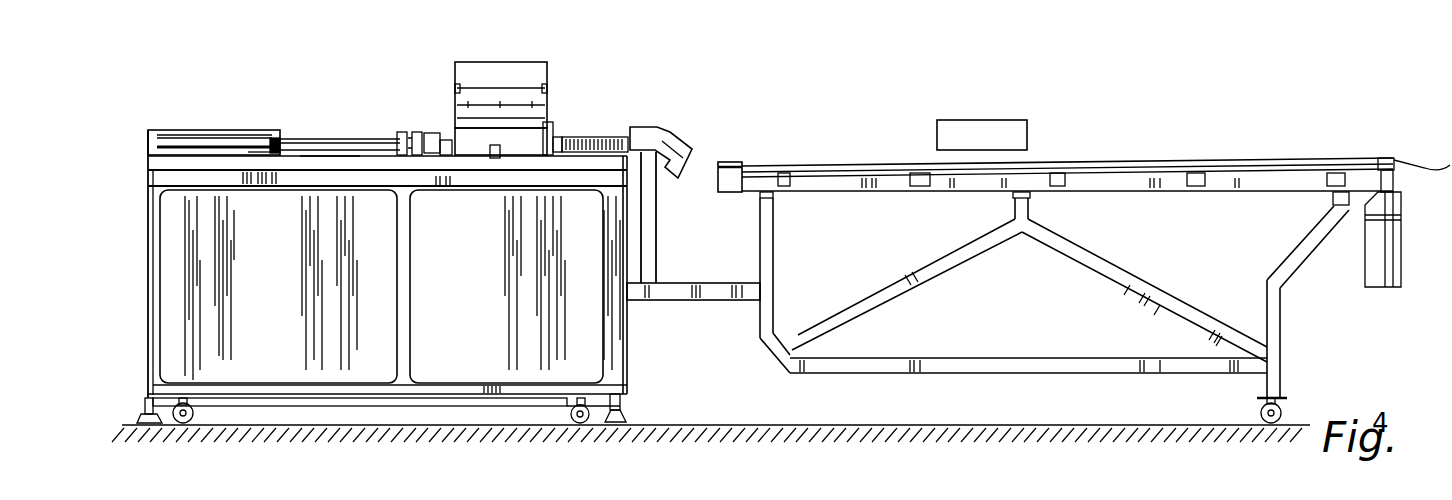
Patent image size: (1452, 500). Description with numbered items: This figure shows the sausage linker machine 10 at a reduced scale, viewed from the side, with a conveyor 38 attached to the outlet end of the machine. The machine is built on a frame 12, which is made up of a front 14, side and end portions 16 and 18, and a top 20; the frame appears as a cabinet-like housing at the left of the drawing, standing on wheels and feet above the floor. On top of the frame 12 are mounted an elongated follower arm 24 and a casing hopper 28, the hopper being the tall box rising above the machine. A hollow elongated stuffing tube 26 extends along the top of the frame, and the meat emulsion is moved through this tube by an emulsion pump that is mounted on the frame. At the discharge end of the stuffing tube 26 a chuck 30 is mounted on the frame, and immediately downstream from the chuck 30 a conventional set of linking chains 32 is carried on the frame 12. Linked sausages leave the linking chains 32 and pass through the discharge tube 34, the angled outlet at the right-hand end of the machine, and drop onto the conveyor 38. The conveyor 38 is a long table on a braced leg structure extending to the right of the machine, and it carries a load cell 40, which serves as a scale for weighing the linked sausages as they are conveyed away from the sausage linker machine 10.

The sausage linker machine 10 is at (330, 160).
The frame 12 is at (600, 397).
The front 14 is at (276, 284).
The frame side 16 is at (148, 236).
The frame end 18 is at (628, 343).
The top 20 is at (283, 128).
The follower arm 24 is at (311, 140).
The stuffing tube 26 is at (299, 140).
The casing hopper 28 is at (558, 122).
The chuck 30 is at (520, 66).
The linking chains 32 is at (613, 140).
The discharge tube 34 is at (667, 147).
The conveyor 38 is at (835, 160).
The load cell 40 is at (992, 120).